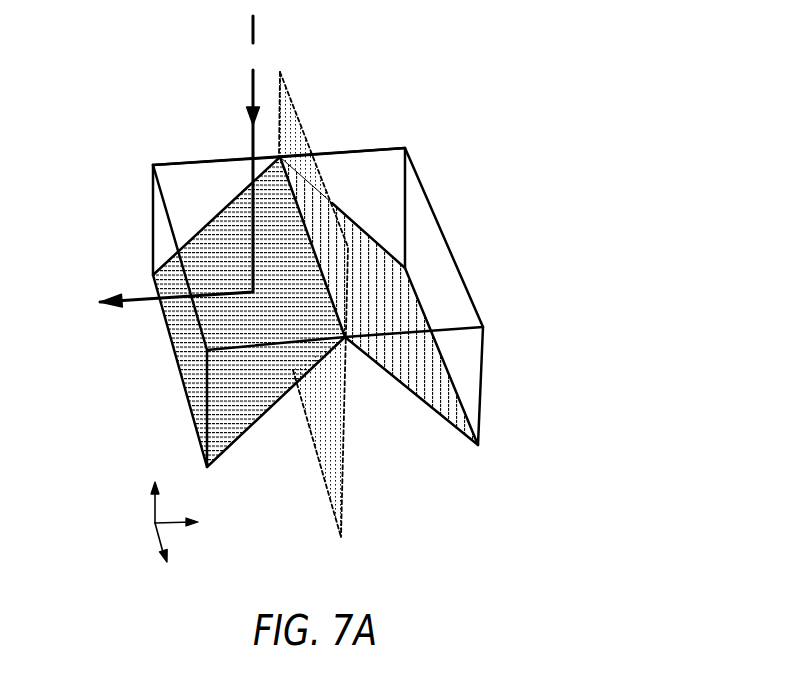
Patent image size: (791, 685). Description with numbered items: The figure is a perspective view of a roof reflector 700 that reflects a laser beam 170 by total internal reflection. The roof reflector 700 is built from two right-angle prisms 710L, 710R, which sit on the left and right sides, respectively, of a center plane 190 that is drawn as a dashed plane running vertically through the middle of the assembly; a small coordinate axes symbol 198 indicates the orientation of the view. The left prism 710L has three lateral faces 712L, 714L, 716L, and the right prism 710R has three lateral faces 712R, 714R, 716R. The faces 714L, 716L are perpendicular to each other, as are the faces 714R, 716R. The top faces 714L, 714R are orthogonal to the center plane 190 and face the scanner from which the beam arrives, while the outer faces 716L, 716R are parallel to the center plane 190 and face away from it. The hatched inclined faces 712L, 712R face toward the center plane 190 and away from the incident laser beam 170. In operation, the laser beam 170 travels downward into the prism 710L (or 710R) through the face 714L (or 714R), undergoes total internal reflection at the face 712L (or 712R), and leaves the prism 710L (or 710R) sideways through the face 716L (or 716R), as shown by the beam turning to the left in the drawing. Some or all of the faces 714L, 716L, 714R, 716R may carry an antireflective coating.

The roof reflector 700 is at (132, 58).
The laser beam 170 is at (182, 161).
The center plane 190 is at (293, 102).
The coordinate axes 198 is at (132, 538).
The right-angle prism 710L is at (152, 197).
The right-angle prism 710R is at (480, 413).
The lateral face 712L is at (277, 397).
The lateral face 712R is at (390, 375).
The lateral face 714L is at (222, 180).
The lateral face 714R is at (374, 170).
The lateral face 716L is at (185, 337).
The lateral face 716R is at (455, 297).